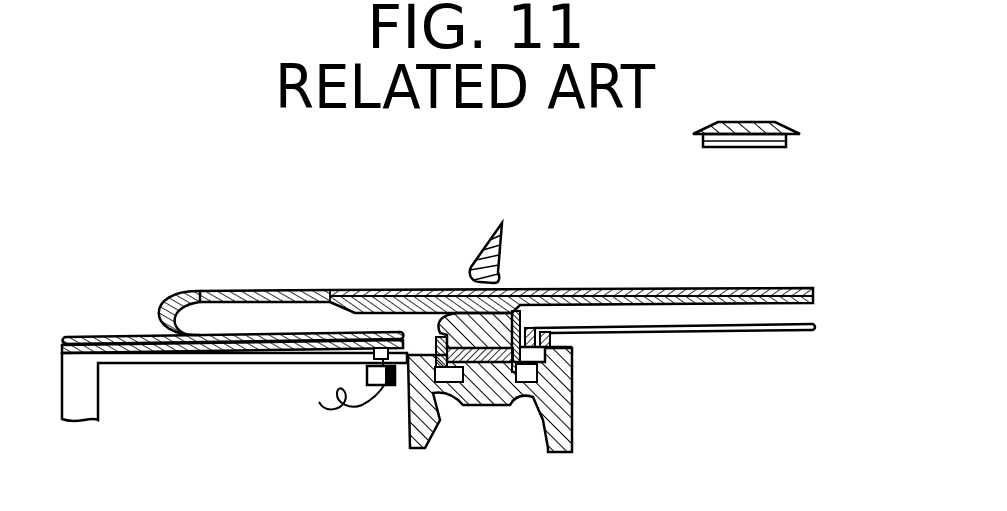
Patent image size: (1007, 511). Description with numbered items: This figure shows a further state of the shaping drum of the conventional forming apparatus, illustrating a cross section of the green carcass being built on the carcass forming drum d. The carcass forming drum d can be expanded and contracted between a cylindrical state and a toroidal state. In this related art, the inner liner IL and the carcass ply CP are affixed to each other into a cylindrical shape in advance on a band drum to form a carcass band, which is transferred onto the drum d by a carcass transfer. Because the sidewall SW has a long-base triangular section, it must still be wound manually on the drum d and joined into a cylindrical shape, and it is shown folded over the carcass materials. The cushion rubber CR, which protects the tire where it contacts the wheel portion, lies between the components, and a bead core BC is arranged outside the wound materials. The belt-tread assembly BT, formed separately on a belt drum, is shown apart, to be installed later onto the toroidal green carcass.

The belt-tread assembly BT is at (797, 124).
The sidewall SW is at (312, 288).
The carcass ply CP is at (394, 290).
The bead core BC is at (505, 240).
The cushion rubber CR is at (530, 311).
The inner liner IL is at (795, 304).
The carcass forming drum d is at (347, 423).